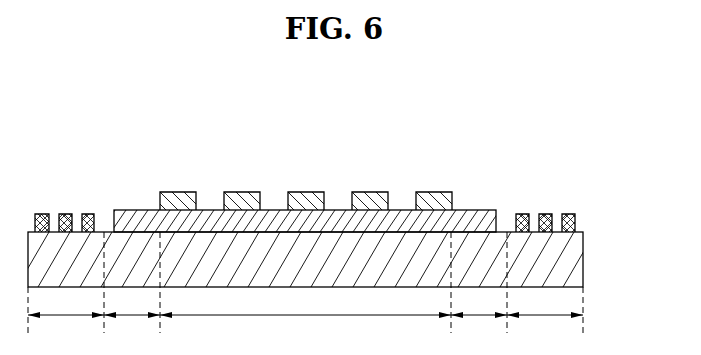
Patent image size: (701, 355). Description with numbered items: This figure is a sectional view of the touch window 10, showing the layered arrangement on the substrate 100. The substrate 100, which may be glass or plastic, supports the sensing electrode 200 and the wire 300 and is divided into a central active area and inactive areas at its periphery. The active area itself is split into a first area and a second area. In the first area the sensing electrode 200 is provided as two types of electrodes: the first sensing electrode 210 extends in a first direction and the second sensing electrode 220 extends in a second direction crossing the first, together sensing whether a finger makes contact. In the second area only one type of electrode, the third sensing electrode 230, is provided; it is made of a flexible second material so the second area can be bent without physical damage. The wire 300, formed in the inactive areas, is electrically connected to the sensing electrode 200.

The touch window 10 is at (84, 108).
The substrate 100 is at (583, 262).
The sensing electrode 200 is at (305, 170).
The first sensing electrode 210 is at (364, 192).
The second sensing electrode 220 is at (399, 212).
The third sensing electrode 230 is at (478, 189).
The wire 300 is at (575, 221).